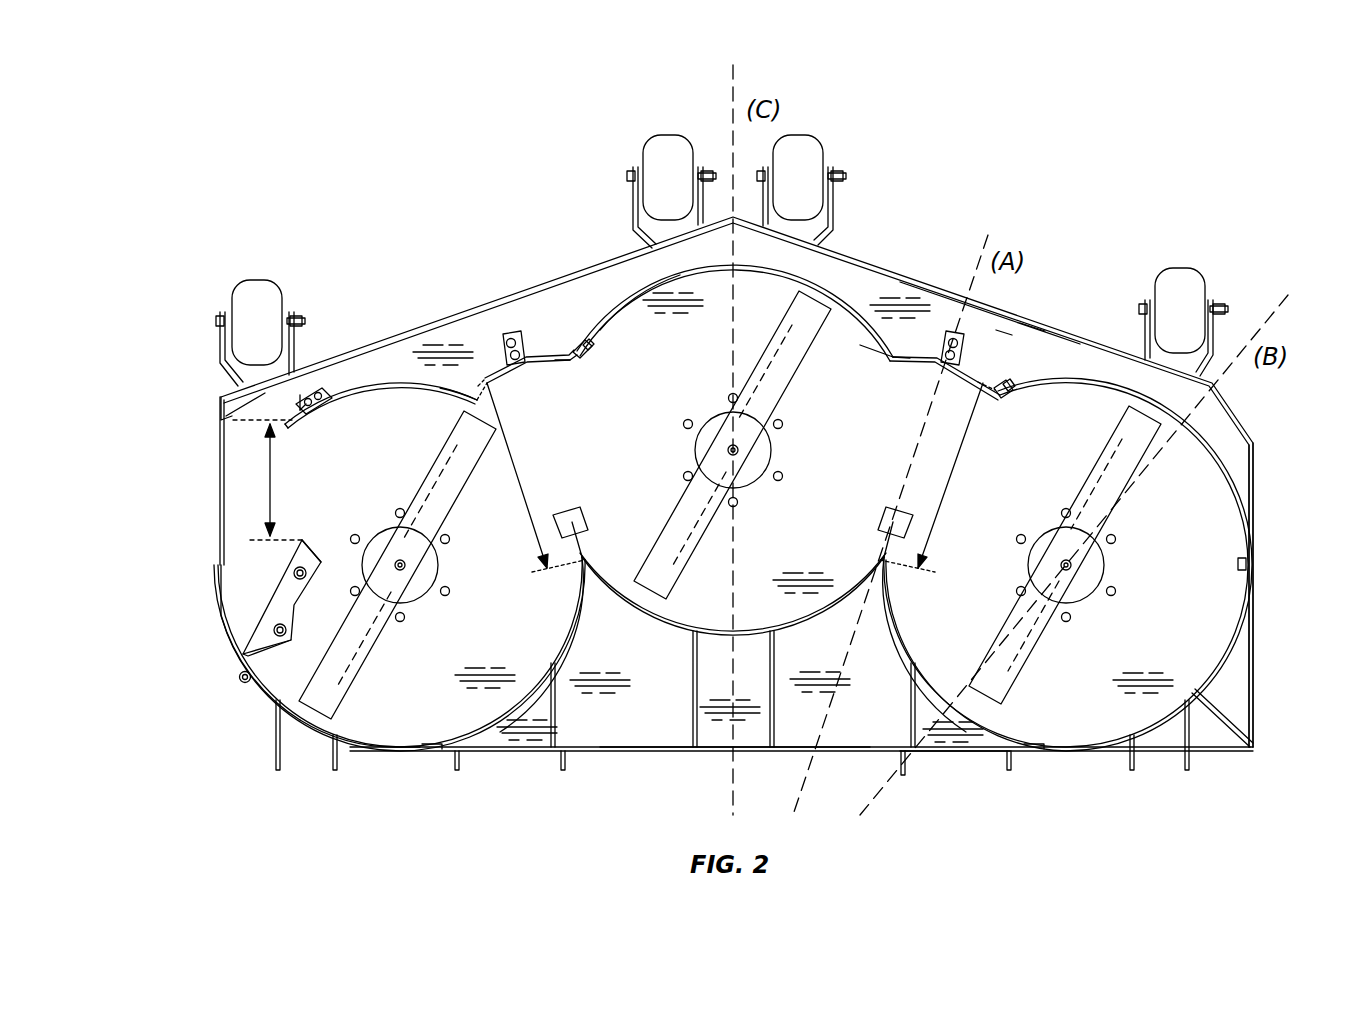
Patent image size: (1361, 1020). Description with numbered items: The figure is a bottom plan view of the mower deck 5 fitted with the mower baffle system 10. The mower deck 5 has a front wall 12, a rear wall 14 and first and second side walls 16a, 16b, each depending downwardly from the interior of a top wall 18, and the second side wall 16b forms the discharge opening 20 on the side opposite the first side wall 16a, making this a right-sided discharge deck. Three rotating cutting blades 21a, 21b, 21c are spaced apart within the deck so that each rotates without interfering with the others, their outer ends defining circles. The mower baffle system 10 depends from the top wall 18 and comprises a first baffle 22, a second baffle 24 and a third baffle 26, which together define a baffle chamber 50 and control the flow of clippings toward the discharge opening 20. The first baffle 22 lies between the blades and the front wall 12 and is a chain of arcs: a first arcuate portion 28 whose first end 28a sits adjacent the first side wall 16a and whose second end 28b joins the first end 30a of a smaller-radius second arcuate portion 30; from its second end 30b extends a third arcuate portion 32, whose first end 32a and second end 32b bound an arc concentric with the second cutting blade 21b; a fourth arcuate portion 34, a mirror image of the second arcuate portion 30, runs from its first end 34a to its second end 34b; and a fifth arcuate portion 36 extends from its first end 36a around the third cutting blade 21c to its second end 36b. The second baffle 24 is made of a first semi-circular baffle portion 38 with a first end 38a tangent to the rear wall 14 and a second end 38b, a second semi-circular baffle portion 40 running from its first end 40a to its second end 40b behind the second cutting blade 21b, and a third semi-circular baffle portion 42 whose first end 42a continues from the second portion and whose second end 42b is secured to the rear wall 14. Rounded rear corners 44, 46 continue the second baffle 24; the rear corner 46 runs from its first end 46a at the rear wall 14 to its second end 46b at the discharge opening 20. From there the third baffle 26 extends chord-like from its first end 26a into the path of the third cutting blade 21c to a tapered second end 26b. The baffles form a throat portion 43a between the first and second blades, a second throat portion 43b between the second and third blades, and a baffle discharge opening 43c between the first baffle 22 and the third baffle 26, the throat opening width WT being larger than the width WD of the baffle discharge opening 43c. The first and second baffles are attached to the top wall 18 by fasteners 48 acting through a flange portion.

The mower deck 5 is at (1000, 315).
The mower baffle system 10 is at (835, 283).
The front wall 12 is at (562, 280).
The rear wall 14 is at (958, 755).
The first side wall 16a is at (1256, 470).
The second side wall 16b is at (228, 402).
The top wall 18 is at (895, 300).
The discharge opening 20 is at (193, 493).
The first cutting blade 21a is at (1032, 655).
The second cutting blade 21b is at (677, 522).
The third cutting blade 21c is at (378, 640).
The first baffle 22 is at (628, 292).
The second baffle 24 is at (662, 628).
The third baffle 26 is at (290, 597).
The first end of third baffle 26a is at (250, 648).
The second end of third baffle 26b is at (302, 546).
The first arcuate portion 28 is at (1203, 440).
The first end of first arcuate portion 28a is at (1240, 570).
The second end of first arcuate portion 28b is at (1015, 395).
The second arcuate portion 30 is at (940, 366).
The first end of second arcuate portion 30a is at (1030, 335).
The second end of second arcuate portion 30b is at (903, 372).
The third arcuate portion 32 is at (742, 268).
The first end of third arcuate portion 32a is at (877, 352).
The second end of third arcuate portion 32b is at (592, 350).
The fourth arcuate portion 34 is at (532, 368).
The first end of fourth arcuate portion 34a is at (568, 366).
The second end of fourth arcuate portion 34b is at (478, 386).
The fifth arcuate portion 36 is at (360, 388).
The first end of fifth arcuate portion 36a is at (440, 393).
The second end of fifth arcuate portion 36b is at (297, 422).
The first semi-circular baffle portion 38 is at (912, 662).
The first end of first semi-circular baffle portion 38a is at (1032, 745).
The second end of first semi-circular baffle portion 38b is at (886, 582).
The second semi-circular baffle portion 40 is at (718, 632).
The first end of second semi-circular baffle portion 40a is at (868, 563).
The second end of second semi-circular baffle portion 40b is at (598, 575).
The third semi-circular baffle portion 42 is at (558, 656).
The first end of third semi-circular baffle portion 42a is at (582, 578).
The second end of third semi-circular baffle portion 42b is at (435, 745).
The throat portion 43a is at (895, 470).
The second throat portion 43b is at (572, 460).
The baffle discharge opening 43c is at (307, 490).
The rear corner 44 is at (1197, 697).
The rear corner 46 is at (270, 700).
The first end of rear corner 46a is at (373, 752).
The second end of rear corner 46b is at (238, 678).
The fastener 48 is at (316, 392).
The baffle chamber 50 is at (393, 368).
The width of baffle discharge opening WD is at (267, 480).
The opening width of throat portion WT is at (735, 475).